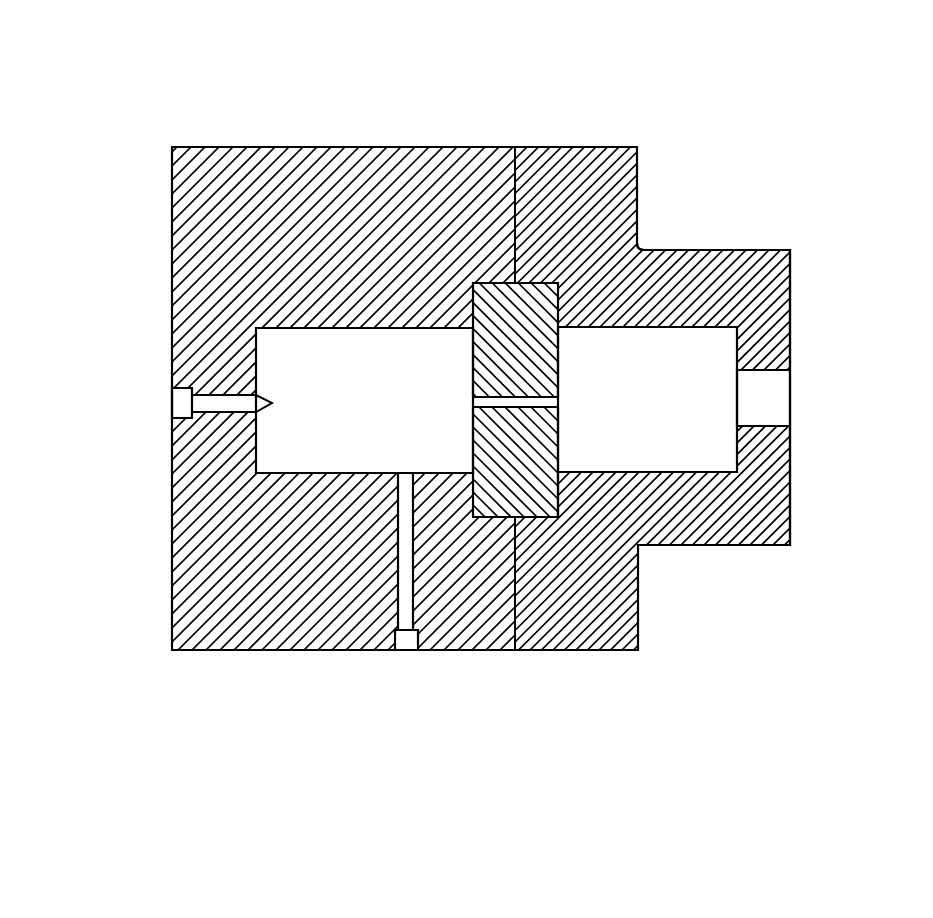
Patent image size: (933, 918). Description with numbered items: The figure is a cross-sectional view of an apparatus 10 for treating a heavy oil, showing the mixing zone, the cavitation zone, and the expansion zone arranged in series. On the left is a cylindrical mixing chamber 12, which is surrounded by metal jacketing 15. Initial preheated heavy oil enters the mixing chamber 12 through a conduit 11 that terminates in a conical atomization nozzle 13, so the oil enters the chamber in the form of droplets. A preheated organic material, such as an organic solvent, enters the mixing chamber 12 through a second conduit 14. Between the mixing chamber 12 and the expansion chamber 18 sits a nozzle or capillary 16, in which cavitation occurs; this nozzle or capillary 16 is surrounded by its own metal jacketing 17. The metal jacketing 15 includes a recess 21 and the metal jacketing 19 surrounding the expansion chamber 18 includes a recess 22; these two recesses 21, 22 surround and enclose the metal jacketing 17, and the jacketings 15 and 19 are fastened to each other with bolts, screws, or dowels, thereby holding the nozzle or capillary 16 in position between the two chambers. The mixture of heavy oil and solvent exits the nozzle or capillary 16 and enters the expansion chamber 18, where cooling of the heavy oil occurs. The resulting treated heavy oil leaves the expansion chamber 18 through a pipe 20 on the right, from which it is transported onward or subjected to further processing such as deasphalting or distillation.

The apparatus 10 is at (112, 80).
The conduit 11 is at (172, 403).
The cylindrical mixing chamber 12 is at (277, 453).
The conical atomization nozzle 13 is at (215, 403).
The conduit 14 is at (392, 565).
The metal jacketing 15 is at (270, 165).
The nozzle or capillary 16 is at (539, 397).
The metal jacketing 17 is at (505, 493).
The expansion chamber 18 is at (660, 363).
The metal jacketing 19 is at (772, 263).
The pipe 20 is at (775, 407).
The recess 21 is at (490, 297).
The recess 22 is at (555, 495).